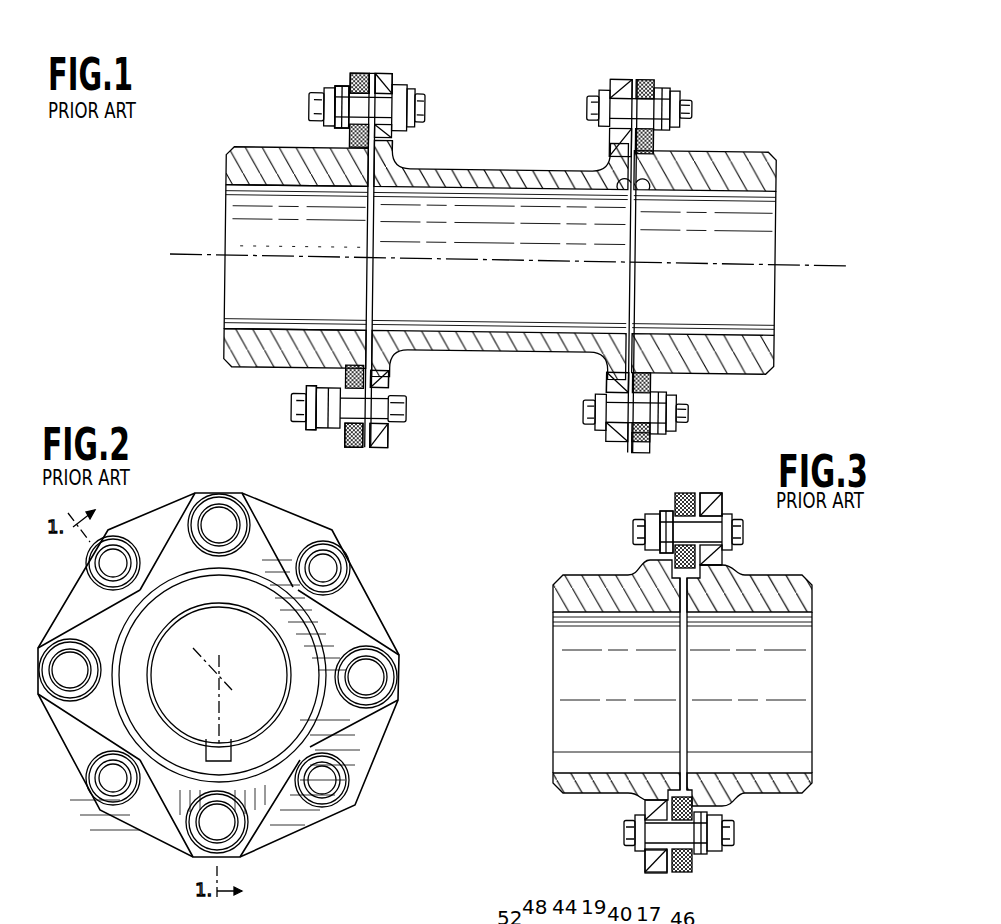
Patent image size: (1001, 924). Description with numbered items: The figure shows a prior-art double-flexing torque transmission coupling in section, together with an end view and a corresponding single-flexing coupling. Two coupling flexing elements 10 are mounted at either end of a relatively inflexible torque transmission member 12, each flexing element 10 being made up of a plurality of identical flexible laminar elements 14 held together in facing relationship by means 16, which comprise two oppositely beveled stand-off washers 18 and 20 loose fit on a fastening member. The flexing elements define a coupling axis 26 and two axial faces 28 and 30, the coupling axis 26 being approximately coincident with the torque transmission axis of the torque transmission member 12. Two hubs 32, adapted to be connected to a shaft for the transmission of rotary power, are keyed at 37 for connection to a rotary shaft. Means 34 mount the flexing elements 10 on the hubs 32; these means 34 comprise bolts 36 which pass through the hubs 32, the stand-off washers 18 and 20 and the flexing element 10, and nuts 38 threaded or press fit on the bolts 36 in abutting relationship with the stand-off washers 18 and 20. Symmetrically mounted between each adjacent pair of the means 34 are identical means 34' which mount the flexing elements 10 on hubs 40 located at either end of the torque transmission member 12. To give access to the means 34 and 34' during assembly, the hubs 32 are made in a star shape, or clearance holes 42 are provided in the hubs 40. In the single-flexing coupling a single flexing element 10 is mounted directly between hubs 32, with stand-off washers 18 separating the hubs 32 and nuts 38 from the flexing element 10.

In FIG. 1, the coupling flexing element 10 is at (374, 450).
In FIG. 3, the coupling flexing element 10 is at (685, 493).
In FIG. 1, the torque transmission member 12 is at (523, 172).
In FIG. 3, the torque transmission member 12 is at (682, 683).
In FIG. 1, the flexible laminar elements 14 is at (360, 73).
In FIG. 1, the means for holding laminar elements together 16 is at (352, 447).
In FIG. 1, the stand-off washer 18 is at (345, 78).
In FIG. 3, the stand-off washer 18 is at (647, 560).
In FIG. 1, the stand-off washer 20 is at (372, 74).
In FIG. 3, the stand-off washer 20 is at (716, 562).
In FIG. 1, the coupling axis 26 is at (834, 263).
In FIG. 1, the axial face 28 is at (618, 195).
In FIG. 1, the axial face 30 is at (639, 197).
In FIG. 1, the hub 32 is at (340, 446).
In FIG. 2, the hub 32 is at (399, 658).
In FIG. 3, the hub 32 is at (716, 497).
In FIG. 1, the means for mounting the flexing elements on the hubs 34 is at (492, 263).
In FIG. 2, the means for mounting the flexing elements on the hubs 34 is at (218, 673).
In FIG. 3, the means for mounting the flexing elements on the hubs 34 is at (705, 682).
In FIG. 1, the means for mounting the flexing elements on the hubs 34' is at (382, 100).
In FIG. 1, the bolt 36 is at (386, 88).
In FIG. 1, the key 37 is at (268, 330).
In FIG. 2, the key 37 is at (208, 748).
In FIG. 1, the nut 38 is at (324, 92).
In FIG. 1, the hub 40 is at (609, 78).
In FIG. 1, the clearance hole 42 is at (607, 386).